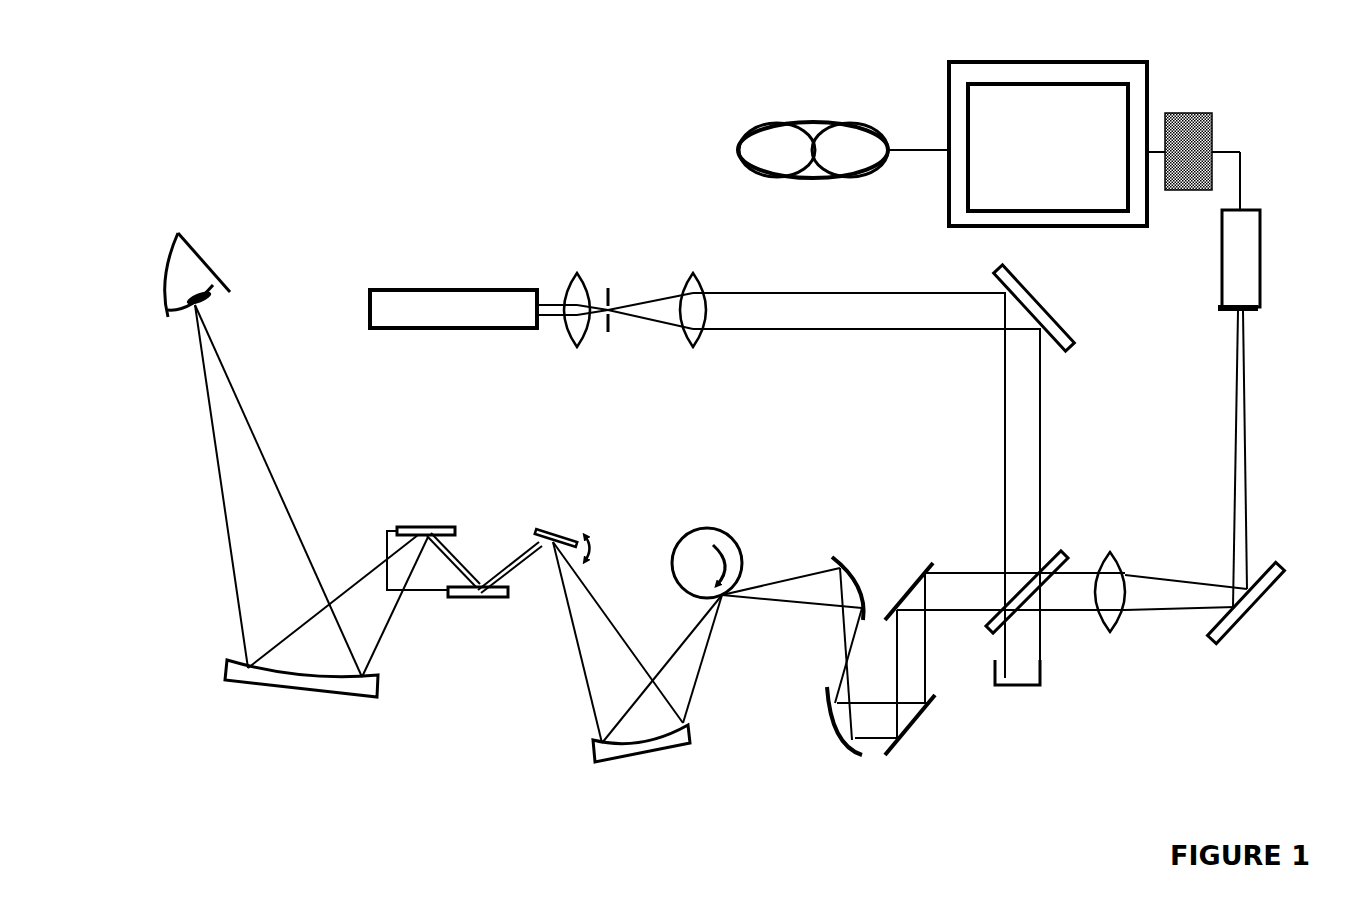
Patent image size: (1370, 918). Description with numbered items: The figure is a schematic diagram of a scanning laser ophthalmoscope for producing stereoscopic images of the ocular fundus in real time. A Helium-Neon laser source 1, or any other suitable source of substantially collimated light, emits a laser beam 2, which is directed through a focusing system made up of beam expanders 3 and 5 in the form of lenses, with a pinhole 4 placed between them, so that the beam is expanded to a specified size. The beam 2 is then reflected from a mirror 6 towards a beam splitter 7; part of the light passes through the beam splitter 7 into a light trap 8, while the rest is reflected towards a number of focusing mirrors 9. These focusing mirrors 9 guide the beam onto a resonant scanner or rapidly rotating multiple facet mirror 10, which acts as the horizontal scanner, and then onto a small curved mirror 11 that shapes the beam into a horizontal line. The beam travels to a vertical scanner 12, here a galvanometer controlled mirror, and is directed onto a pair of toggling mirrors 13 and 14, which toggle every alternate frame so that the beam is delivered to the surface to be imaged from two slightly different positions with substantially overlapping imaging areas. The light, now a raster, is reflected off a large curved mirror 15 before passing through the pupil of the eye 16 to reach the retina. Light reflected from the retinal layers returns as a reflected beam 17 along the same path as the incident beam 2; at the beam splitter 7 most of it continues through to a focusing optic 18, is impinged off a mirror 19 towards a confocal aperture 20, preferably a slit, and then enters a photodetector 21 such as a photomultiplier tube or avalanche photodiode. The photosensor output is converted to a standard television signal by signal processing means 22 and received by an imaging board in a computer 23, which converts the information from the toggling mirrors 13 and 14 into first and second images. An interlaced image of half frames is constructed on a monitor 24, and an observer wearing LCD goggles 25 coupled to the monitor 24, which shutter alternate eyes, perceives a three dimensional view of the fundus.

The laser source 1 is at (457, 290).
The laser beam 2 is at (850, 330).
The beam expander 3 is at (580, 272).
The pinhole 4 is at (607, 327).
The beam expander 5 is at (692, 280).
The mirror 6 is at (1073, 328).
The beam splitter 7 is at (998, 573).
The light trap 8 is at (1028, 685).
The focusing mirrors 9 is at (897, 773).
The rotating multiple facet mirror 10 is at (725, 530).
The small curved mirror 11 is at (637, 757).
The vertical scanner 12 is at (542, 530).
The toggling mirror 13 is at (420, 527).
The toggling mirror 14 is at (468, 597).
The large curved mirror 15 is at (302, 688).
The eye 16 is at (202, 263).
The reflected beam 17 is at (1150, 615).
The focusing optic 18 is at (1115, 560).
The mirror 19 is at (1260, 605).
The confocal aperture 20 is at (1257, 310).
The photodetector 21 is at (1260, 250).
The signal processing means 22 is at (1212, 123).
The computer 23 is at (949, 117).
The monitor 24 is at (1048, 147).
The LCD goggles 25 is at (750, 130).